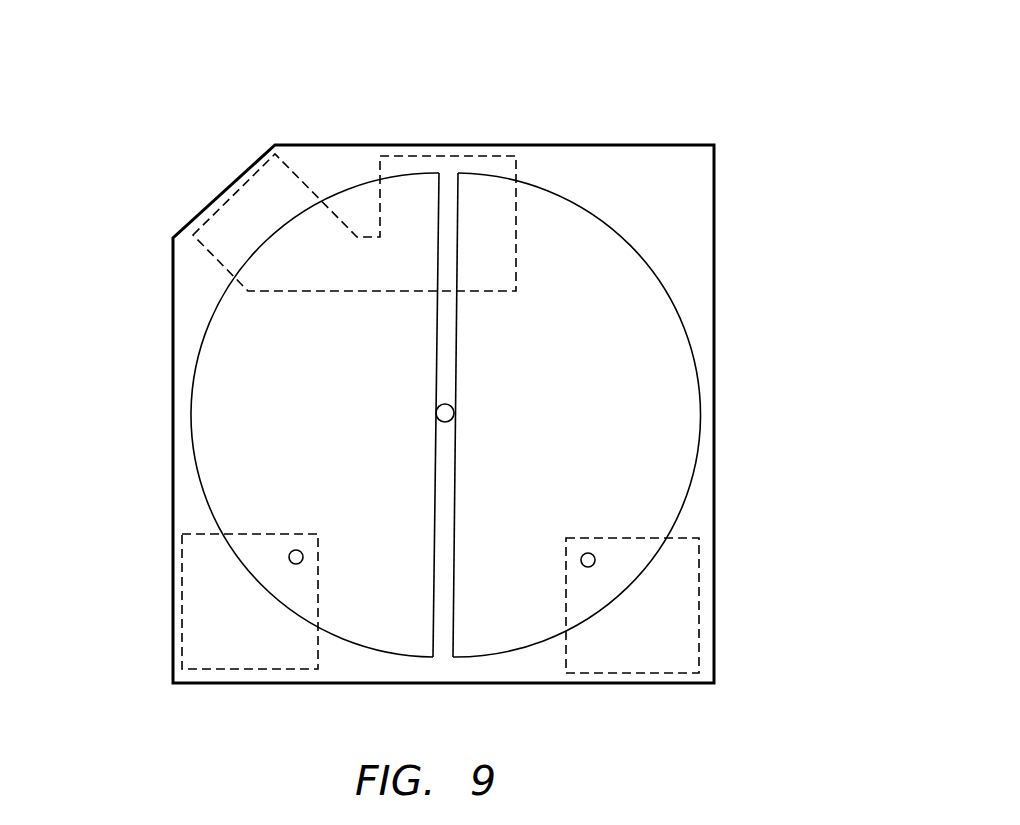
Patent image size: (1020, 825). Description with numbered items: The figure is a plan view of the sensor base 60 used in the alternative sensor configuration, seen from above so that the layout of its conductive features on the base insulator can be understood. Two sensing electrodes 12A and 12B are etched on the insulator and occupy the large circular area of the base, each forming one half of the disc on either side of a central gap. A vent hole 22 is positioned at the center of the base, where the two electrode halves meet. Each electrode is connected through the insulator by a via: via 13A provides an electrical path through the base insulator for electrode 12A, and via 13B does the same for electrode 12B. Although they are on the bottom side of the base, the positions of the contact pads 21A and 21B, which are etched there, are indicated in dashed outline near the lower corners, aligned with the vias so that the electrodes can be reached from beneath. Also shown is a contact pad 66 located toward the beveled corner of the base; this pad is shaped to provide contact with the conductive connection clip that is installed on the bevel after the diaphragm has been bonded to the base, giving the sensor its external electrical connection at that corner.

The sensor base 60 is at (467, 353).
The contact pad 66 is at (392, 153).
The sensing electrode 12A is at (646, 380).
The sensing electrode 12B is at (240, 413).
The vent hole 22 is at (452, 399).
The via 13A is at (595, 558).
The via 13B is at (353, 503).
The contact pad 21A is at (685, 555).
The contact pad 21B is at (200, 572).